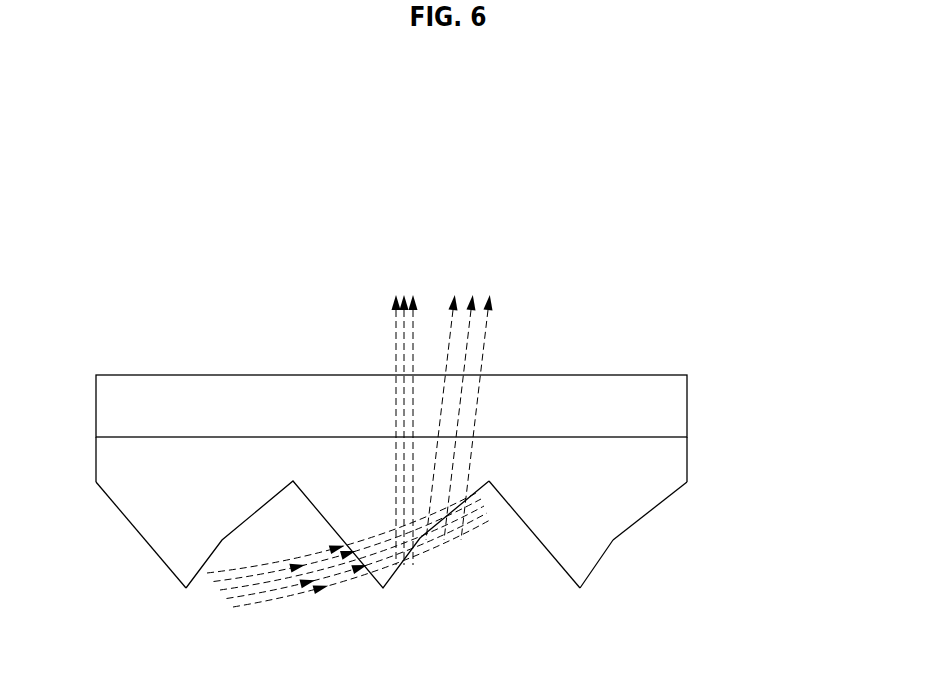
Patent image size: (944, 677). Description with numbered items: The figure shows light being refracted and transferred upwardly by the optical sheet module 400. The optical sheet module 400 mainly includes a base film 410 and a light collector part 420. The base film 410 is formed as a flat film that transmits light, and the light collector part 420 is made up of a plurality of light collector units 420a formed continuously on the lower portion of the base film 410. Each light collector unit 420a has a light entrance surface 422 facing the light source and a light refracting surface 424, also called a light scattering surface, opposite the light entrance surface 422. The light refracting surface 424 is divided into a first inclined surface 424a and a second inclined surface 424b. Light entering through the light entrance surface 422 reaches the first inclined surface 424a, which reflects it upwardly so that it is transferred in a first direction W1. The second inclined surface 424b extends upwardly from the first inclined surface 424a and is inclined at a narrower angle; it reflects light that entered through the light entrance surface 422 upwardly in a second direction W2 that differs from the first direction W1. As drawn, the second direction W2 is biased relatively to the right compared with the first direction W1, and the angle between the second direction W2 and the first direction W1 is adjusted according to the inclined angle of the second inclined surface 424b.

The optical sheet module 400 is at (452, 508).
The base film 410 is at (672, 409).
The light collector part 420 is at (423, 539).
The light collector unit 420a is at (128, 541).
The light entrance surface 422 is at (542, 545).
The light refracting surface 424 is at (700, 560).
The first inclined surface 424a is at (598, 562).
The second inclined surface 424b is at (655, 510).
The first direction W1 is at (395, 342).
The second direction W2 is at (482, 351).